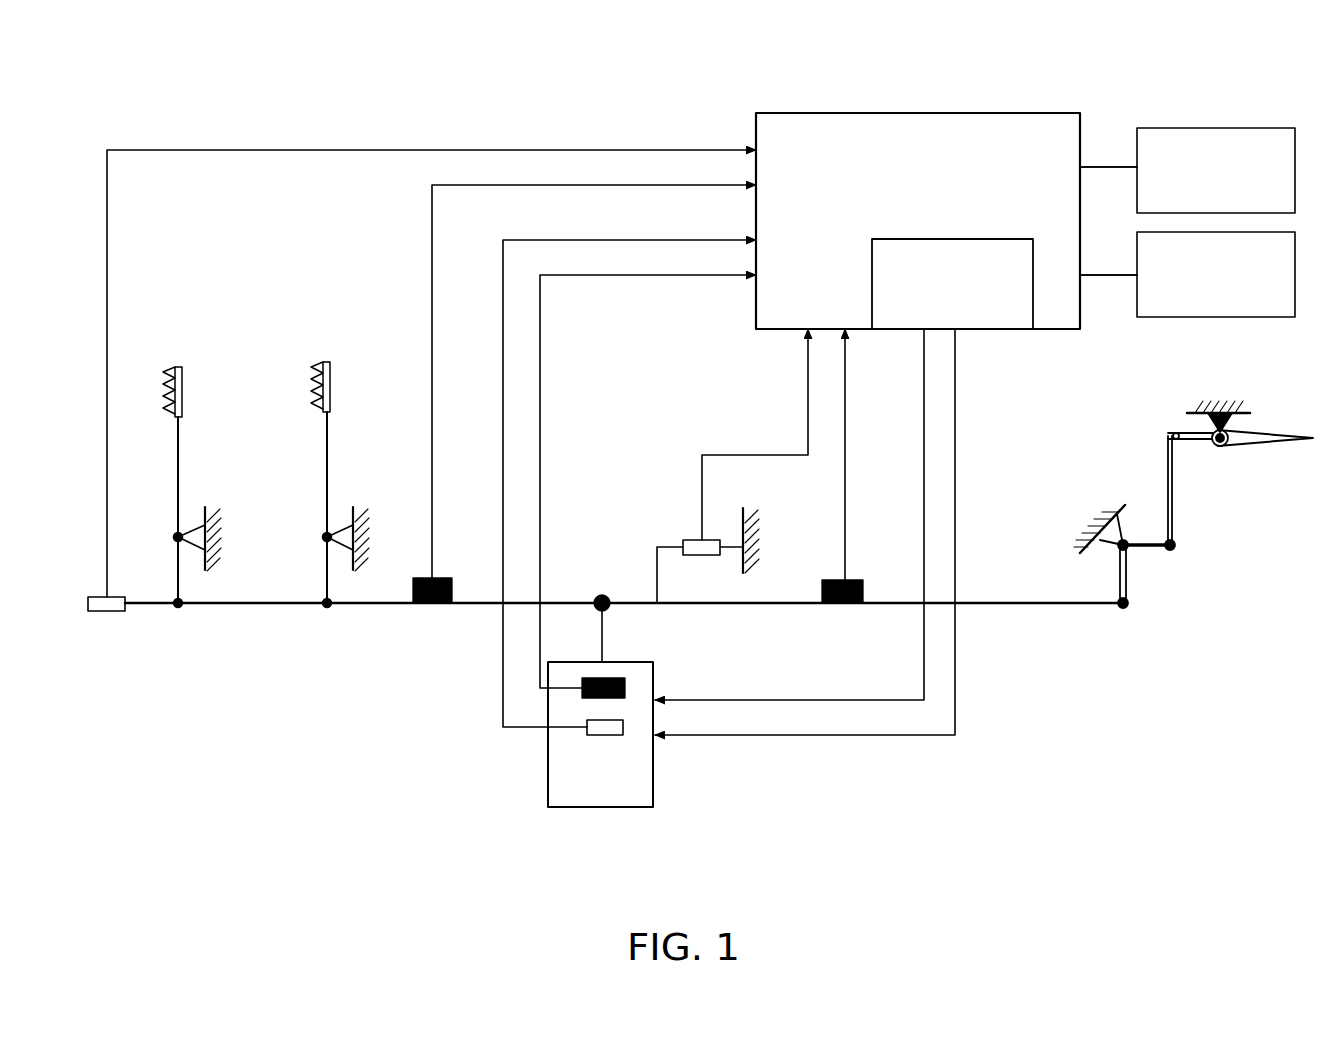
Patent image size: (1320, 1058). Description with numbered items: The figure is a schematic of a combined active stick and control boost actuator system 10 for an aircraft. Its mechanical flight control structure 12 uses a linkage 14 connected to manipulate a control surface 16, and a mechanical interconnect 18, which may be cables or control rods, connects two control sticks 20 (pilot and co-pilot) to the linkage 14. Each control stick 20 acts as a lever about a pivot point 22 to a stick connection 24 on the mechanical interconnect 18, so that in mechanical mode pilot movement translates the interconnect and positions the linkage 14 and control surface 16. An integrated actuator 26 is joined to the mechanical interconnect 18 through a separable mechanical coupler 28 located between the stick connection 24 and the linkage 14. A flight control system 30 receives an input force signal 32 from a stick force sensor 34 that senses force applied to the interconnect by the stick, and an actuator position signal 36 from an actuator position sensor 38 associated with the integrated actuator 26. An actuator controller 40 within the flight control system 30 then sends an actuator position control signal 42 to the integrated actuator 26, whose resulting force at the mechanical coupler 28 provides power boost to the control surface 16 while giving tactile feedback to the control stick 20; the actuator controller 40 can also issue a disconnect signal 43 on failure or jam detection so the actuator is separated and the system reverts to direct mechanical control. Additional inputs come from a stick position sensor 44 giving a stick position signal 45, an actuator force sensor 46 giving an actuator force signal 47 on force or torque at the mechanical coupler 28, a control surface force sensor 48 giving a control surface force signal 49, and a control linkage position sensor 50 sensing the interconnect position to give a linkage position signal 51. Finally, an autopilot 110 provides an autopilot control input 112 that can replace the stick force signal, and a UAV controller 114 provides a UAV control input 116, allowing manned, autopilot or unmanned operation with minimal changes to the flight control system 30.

The combined active stick and control boost actuator system 10 is at (392, 103).
The mechanical flight control structure 12 is at (1020, 681).
The linkage 14 is at (1138, 550).
The control surface 16 is at (1240, 440).
The mechanical interconnect 18 is at (714, 603).
The control stick 20 is at (180, 430).
The pivot point 22 is at (182, 534).
The stick connection 24 is at (178, 607).
The integrated actuator 26 is at (653, 778).
The mechanical coupler 28 is at (596, 592).
The flight control system 30 is at (918, 113).
The input force signal 32 is at (432, 299).
The stick force sensor 34 is at (438, 578).
The actuator position signal 36 is at (503, 658).
The actuator position sensor 38 is at (617, 727).
The actuator controller 40 is at (872, 292).
The actuator position control signal 42 is at (820, 735).
The disconnect signal 43 is at (770, 698).
The stick position sensor 44 is at (105, 612).
The stick position signal 45 is at (107, 307).
The actuator force sensor 46 is at (625, 688).
The actuator force signal 47 is at (543, 445).
The control surface force sensor 48 is at (848, 580).
The control surface force signal 49 is at (845, 492).
The control linkage position sensor 50 is at (690, 540).
The linkage position signal 51 is at (808, 418).
The autopilot 110 is at (1188, 128).
The autopilot control input 112 is at (1100, 167).
The UAV controller 114 is at (1205, 317).
The UAV control input 116 is at (1105, 275).